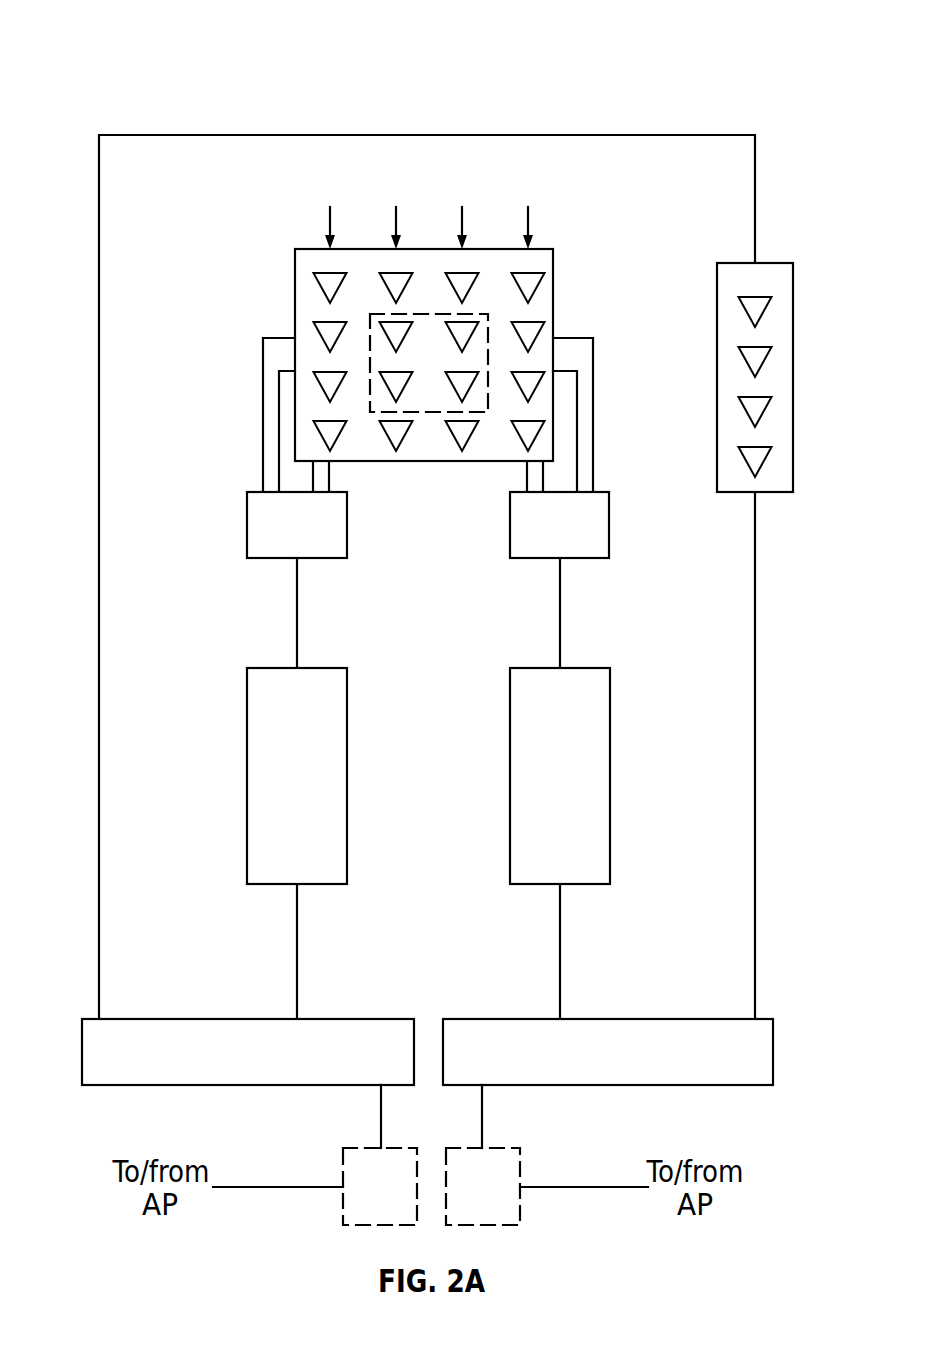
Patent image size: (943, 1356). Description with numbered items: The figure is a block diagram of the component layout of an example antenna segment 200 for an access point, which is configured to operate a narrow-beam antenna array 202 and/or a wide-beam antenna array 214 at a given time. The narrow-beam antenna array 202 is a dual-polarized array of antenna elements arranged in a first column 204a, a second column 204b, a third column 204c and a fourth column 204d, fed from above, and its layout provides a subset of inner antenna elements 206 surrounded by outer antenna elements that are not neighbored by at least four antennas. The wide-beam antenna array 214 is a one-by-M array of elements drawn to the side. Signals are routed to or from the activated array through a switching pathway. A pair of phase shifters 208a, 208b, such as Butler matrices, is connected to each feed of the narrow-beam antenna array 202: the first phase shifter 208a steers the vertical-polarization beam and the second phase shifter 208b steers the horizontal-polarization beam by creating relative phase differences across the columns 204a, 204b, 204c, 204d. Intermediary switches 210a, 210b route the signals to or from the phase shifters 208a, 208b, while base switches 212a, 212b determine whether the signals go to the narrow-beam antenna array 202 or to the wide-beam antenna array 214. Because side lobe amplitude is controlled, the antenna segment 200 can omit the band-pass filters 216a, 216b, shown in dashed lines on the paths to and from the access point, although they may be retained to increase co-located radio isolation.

The antenna segment 200 is at (125, 58).
The narrow-beam antenna array 202 is at (555, 293).
The first column 204a is at (330, 220).
The second column 204b is at (394, 215).
The third column 204c is at (487, 191).
The fourth column 204d is at (529, 220).
The inner antenna elements 206 is at (370, 328).
The first phase shifter 208a is at (327, 539).
The second phase shifter 208b is at (590, 539).
The intermediary switch 210a is at (327, 791).
The intermediary switch 210b is at (590, 791).
The base switch 212a is at (277, 1066).
The base switch 212b is at (638, 1066).
The wide-beam antenna array 214 is at (773, 263).
The band-pass filter 216a is at (410, 1199).
The band-pass filter 216b is at (512, 1199).